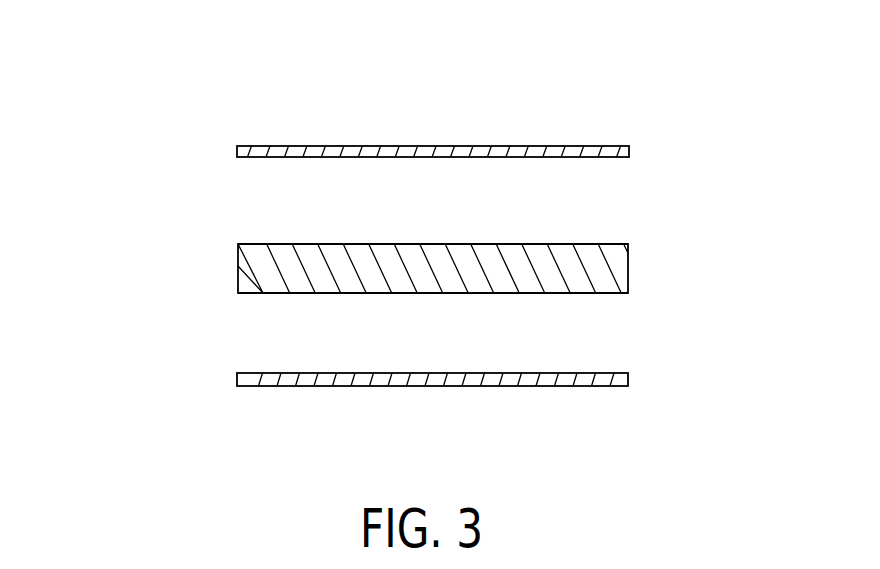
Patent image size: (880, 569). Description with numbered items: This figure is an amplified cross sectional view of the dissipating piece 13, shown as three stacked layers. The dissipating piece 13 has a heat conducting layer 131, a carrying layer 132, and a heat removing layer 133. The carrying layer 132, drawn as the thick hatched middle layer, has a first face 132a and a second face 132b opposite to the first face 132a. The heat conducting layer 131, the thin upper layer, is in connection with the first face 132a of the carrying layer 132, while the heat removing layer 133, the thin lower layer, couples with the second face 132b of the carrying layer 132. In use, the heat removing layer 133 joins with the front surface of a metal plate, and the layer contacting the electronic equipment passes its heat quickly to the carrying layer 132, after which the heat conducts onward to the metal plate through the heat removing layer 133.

The dissipating piece 13 is at (67, 47).
The heat conducting layer 131 is at (268, 151).
The carrying layer 132 is at (276, 263).
The first face 132a is at (566, 246).
The second face 132b is at (573, 293).
The heat removing layer 133 is at (272, 380).